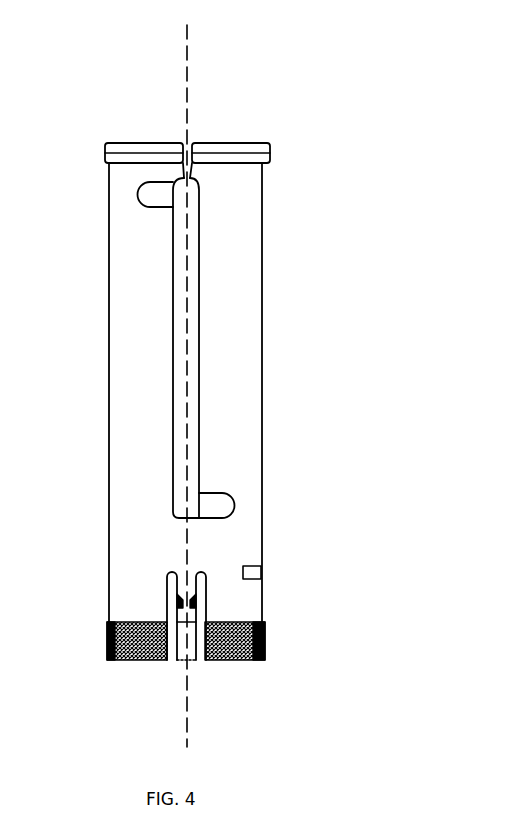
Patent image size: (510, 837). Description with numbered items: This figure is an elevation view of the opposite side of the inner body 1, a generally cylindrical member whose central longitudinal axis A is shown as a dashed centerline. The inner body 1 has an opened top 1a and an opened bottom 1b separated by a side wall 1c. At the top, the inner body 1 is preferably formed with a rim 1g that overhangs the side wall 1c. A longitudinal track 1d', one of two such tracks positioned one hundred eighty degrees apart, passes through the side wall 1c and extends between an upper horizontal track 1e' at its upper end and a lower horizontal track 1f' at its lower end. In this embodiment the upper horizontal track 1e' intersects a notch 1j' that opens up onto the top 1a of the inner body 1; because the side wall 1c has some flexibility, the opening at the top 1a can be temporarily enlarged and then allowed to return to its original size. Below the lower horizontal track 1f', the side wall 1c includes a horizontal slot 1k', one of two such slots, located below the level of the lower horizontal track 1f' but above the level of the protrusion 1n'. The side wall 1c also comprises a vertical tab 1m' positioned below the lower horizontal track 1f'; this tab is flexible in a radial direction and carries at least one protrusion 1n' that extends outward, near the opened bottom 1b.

The inner body 1 is at (273, 124).
The central longitudinal axis A is at (190, 55).
The opened top 1a is at (239, 112).
The opened bottom 1b is at (277, 653).
The side wall 1c is at (243, 357).
The longitudinal track 1d' is at (253, 348).
The upper horizontal track 1e' is at (115, 194).
The lower horizontal track 1f' is at (278, 512).
The rim 1g is at (115, 146).
The notch 1j' is at (164, 116).
The horizontal slot 1k' is at (324, 579).
The vertical tab 1m' is at (164, 690).
The protrusion 1n' is at (114, 612).